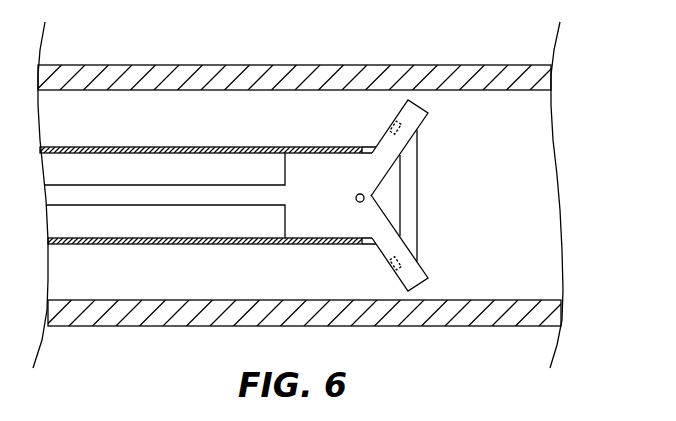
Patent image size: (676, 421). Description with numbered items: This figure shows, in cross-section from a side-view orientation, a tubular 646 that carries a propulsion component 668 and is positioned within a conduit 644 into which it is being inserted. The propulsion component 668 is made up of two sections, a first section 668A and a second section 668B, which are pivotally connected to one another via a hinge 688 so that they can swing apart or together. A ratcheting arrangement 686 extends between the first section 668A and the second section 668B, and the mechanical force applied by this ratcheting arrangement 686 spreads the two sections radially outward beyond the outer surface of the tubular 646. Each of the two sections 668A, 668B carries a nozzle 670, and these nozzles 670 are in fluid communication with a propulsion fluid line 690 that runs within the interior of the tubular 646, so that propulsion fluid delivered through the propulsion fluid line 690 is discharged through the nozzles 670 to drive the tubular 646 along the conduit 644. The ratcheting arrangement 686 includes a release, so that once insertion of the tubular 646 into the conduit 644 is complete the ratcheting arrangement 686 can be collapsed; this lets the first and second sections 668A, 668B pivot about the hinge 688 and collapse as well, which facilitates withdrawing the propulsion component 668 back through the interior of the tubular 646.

The conduit 644 is at (142, 74).
The tubular 646 is at (152, 147).
The propulsion fluid line 690 is at (212, 193).
The propulsion component 668 is at (386, 195).
The first section 668A is at (423, 118).
The second section 668B is at (423, 273).
The nozzle 670 is at (389, 123).
The ratcheting arrangement 686 is at (413, 174).
The hinge 688 is at (363, 201).